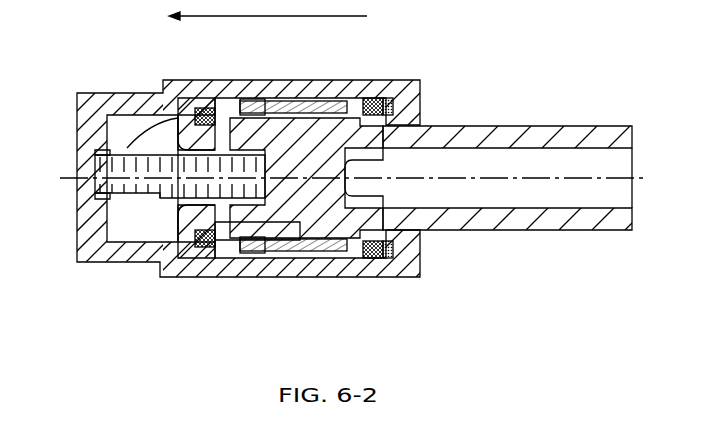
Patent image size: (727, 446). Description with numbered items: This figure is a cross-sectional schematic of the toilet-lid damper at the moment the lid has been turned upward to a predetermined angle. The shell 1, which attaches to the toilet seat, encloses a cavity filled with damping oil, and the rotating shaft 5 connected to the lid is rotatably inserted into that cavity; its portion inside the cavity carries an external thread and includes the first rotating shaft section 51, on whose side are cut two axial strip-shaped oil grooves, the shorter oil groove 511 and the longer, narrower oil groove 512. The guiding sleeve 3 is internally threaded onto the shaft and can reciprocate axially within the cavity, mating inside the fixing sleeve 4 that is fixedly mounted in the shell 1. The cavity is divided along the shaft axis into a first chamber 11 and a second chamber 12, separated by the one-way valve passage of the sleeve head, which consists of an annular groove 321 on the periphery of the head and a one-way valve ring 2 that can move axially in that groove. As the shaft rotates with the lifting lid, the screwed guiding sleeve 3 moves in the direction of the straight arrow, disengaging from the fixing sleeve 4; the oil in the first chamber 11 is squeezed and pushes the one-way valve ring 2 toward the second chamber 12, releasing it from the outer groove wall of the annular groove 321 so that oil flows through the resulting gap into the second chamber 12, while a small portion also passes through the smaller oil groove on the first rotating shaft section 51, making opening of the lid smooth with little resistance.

The shell 1 is at (146, 263).
The first chamber 11 is at (127, 128).
The second chamber 12 is at (262, 100).
The one-way valve ring 2 is at (203, 108).
The annular groove 321 is at (195, 105).
The guiding sleeve 3 is at (258, 236).
The fixing sleeve 4 is at (323, 253).
The rotating shaft 5 is at (328, 157).
The first rotating shaft section 51 is at (182, 198).
The oil groove 511 is at (117, 199).
The oil groove 512 is at (127, 152).